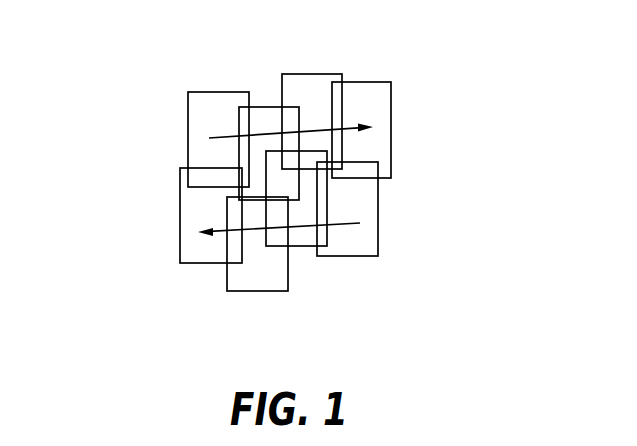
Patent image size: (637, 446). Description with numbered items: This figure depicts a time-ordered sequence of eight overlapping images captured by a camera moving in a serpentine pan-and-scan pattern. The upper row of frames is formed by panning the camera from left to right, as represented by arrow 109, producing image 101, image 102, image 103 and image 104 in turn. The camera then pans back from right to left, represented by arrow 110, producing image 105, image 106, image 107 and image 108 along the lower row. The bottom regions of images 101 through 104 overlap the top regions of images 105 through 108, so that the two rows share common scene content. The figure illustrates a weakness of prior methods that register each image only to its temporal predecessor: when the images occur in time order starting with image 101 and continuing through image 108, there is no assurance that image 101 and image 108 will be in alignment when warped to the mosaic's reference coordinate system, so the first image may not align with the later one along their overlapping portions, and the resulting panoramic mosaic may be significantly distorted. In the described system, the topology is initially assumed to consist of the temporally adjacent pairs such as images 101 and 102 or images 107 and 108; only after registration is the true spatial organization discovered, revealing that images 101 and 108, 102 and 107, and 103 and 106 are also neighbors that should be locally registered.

The image 101 is at (202, 103).
The image 102 is at (265, 113).
The image 103 is at (313, 80).
The image 104 is at (375, 88).
The image 105 is at (369, 253).
The image 106 is at (299, 237).
The image 107 is at (257, 281).
The image 108 is at (194, 257).
The arrow 109 is at (228, 136).
The arrow 110 is at (218, 228).